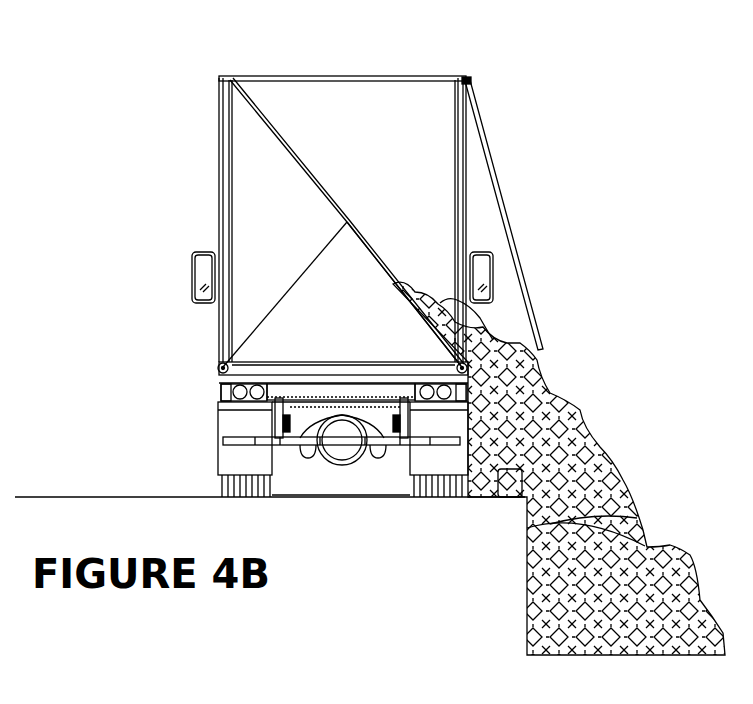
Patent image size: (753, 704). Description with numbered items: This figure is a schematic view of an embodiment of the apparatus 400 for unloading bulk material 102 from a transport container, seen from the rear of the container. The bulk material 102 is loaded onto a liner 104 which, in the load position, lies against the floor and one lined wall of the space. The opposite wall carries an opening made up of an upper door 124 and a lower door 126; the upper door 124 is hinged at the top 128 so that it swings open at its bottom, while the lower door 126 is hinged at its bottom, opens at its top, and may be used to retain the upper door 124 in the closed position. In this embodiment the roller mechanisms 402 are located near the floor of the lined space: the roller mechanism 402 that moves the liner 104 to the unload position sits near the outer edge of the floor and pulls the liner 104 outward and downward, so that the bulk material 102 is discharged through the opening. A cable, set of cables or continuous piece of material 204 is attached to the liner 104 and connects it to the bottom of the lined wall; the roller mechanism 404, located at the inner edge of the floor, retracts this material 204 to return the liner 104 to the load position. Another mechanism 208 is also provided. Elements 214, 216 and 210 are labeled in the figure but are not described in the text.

The apparatus 400 is at (396, 47).
The liner 104 is at (214, 86).
The top 128 is at (476, 80).
The upper door 124 is at (504, 149).
The cable, set of cables, or continuous piece of material 204 is at (258, 305).
The left support arm 214 is at (238, 360).
The right support arm 216 is at (447, 357).
The lower cross bar 210 is at (297, 361).
The roller mechanism 404 is at (214, 366).
The mechanism 208 is at (240, 381).
The roller mechanism 402 is at (476, 354).
The bulk material 102 is at (538, 403).
The lower door 126 is at (482, 429).